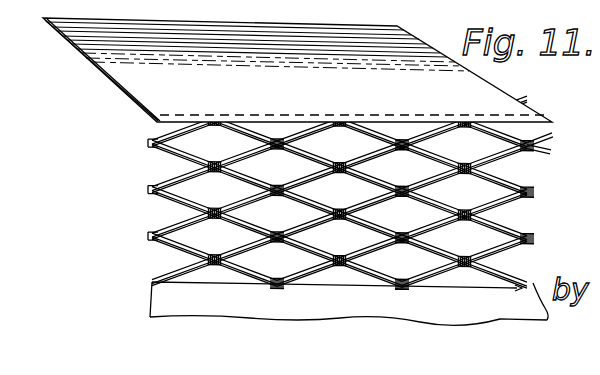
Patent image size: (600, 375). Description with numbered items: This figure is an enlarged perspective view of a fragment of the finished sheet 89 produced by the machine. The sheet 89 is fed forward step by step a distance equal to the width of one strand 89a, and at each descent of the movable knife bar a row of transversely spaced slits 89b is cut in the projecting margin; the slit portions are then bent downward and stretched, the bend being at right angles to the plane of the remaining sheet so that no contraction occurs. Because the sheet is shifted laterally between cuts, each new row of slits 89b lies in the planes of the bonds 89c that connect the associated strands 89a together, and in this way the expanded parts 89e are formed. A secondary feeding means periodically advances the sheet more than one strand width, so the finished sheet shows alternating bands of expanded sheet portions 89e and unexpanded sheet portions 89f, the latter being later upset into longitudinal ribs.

The sheet 89 is at (133, 77).
The strand 89a is at (238, 169).
The slits 89b is at (249, 113).
The bonds 89c is at (404, 188).
The expanded parts 89e is at (168, 216).
The unexpanded sheet portions 89f is at (160, 292).